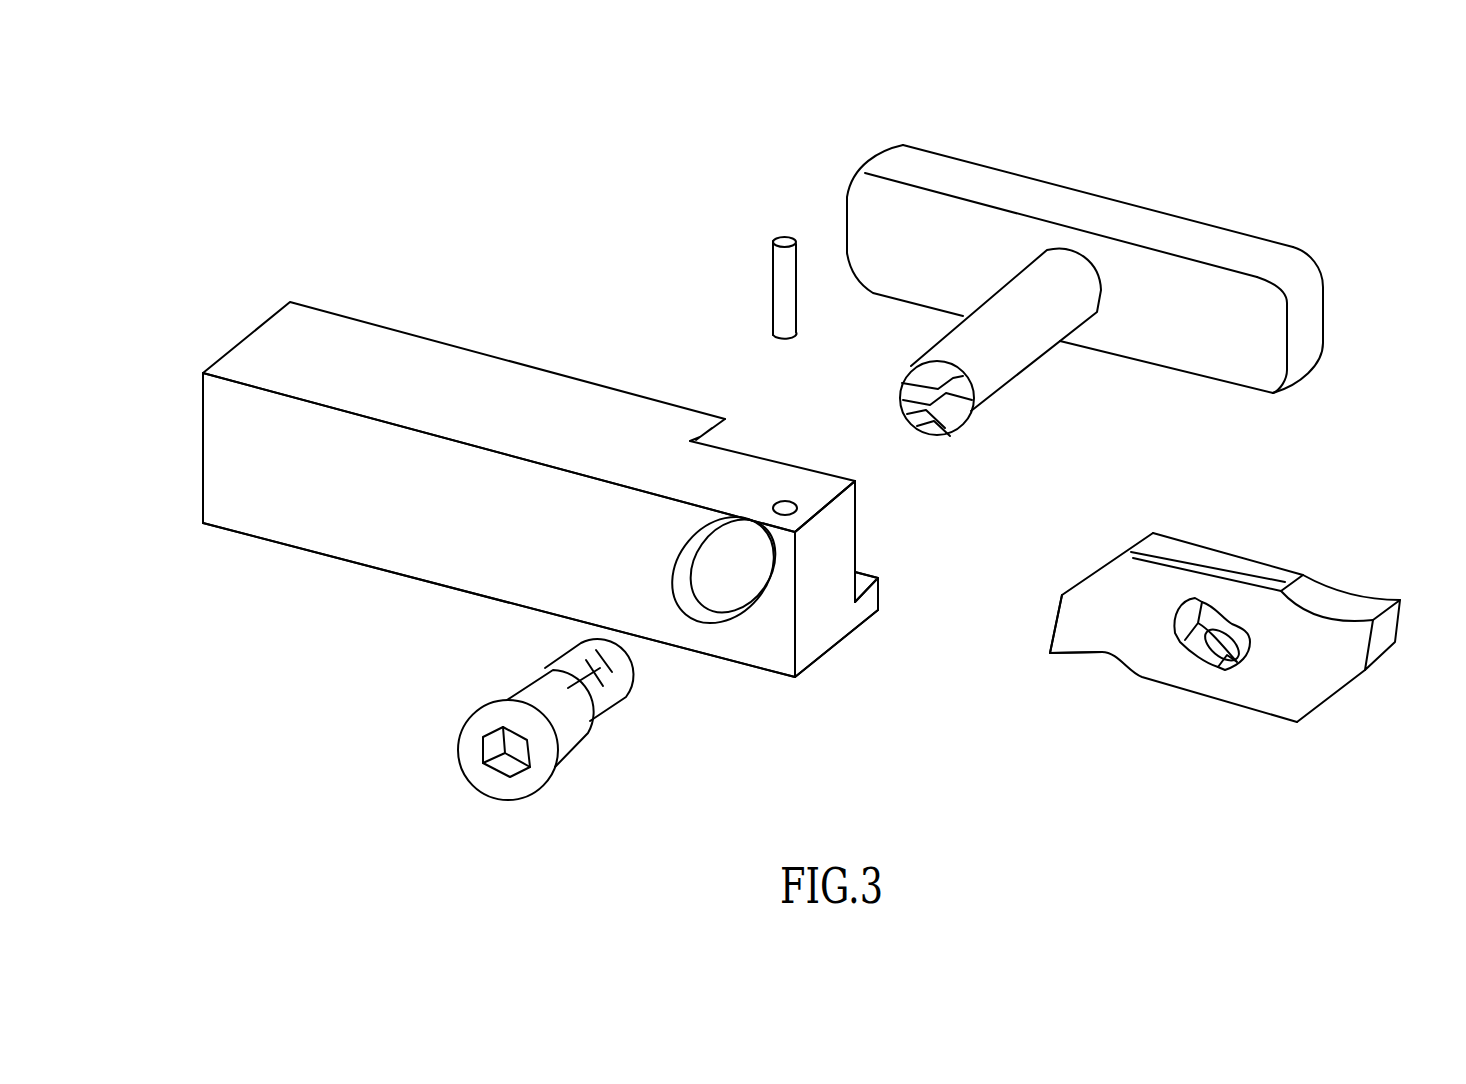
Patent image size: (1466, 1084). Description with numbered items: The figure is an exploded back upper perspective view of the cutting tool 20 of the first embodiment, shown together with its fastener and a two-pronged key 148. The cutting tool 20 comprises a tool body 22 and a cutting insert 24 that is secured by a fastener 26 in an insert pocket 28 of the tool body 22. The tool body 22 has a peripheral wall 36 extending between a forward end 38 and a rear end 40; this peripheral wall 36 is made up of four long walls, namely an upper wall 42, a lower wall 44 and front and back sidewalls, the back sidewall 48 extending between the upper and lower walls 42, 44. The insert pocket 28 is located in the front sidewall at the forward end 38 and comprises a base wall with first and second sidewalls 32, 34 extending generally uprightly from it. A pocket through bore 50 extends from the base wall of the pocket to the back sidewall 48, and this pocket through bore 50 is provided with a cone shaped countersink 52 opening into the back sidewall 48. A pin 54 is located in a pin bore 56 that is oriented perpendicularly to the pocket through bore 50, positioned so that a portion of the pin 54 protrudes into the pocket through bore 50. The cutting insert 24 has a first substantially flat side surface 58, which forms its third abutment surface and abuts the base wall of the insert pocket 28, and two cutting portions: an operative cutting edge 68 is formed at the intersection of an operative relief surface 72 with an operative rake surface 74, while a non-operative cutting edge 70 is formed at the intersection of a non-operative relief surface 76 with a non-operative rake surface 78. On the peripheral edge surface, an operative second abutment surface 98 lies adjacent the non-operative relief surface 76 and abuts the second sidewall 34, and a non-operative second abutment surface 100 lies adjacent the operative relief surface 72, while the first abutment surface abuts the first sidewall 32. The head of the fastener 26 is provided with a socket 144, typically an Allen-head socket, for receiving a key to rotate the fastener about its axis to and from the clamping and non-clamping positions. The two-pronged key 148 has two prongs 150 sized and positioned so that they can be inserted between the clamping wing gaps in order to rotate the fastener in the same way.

The cutting tool 20 is at (443, 155).
The tool body 22 is at (497, 355).
The cutting insert 24 is at (1232, 508).
The fastener 26 is at (445, 717).
The insert pocket 28 is at (880, 543).
The first sidewall 32 is at (872, 613).
The second sidewall 34 is at (720, 435).
The peripheral wall 36 is at (375, 360).
The forward end 38 is at (812, 638).
The rear end 40 is at (203, 437).
The upper wall 42 is at (547, 398).
The lower wall 44 is at (305, 552).
The back sidewall 48 is at (448, 547).
The pocket through bore 50 is at (747, 612).
The cone shaped countersink 52 is at (728, 573).
The pin 54 is at (780, 285).
The pin bore 56 is at (785, 506).
The first side surface 58 is at (1287, 672).
The operative cutting edge 68 is at (1388, 596).
The non-operative cutting edge 70 is at (1050, 655).
The operative relief surface 72 is at (1393, 630).
The operative rake surface 74 is at (1330, 597).
The non-operative relief surface 76 is at (1052, 622).
The non-operative rake surface 78 is at (1097, 657).
The operative second abutment surface 98 is at (1090, 575).
The non-operative second abutment surface 100 is at (1332, 700).
The socket 144 is at (510, 758).
The two-pronged key 148 is at (1143, 183).
The prongs 150 is at (923, 372).